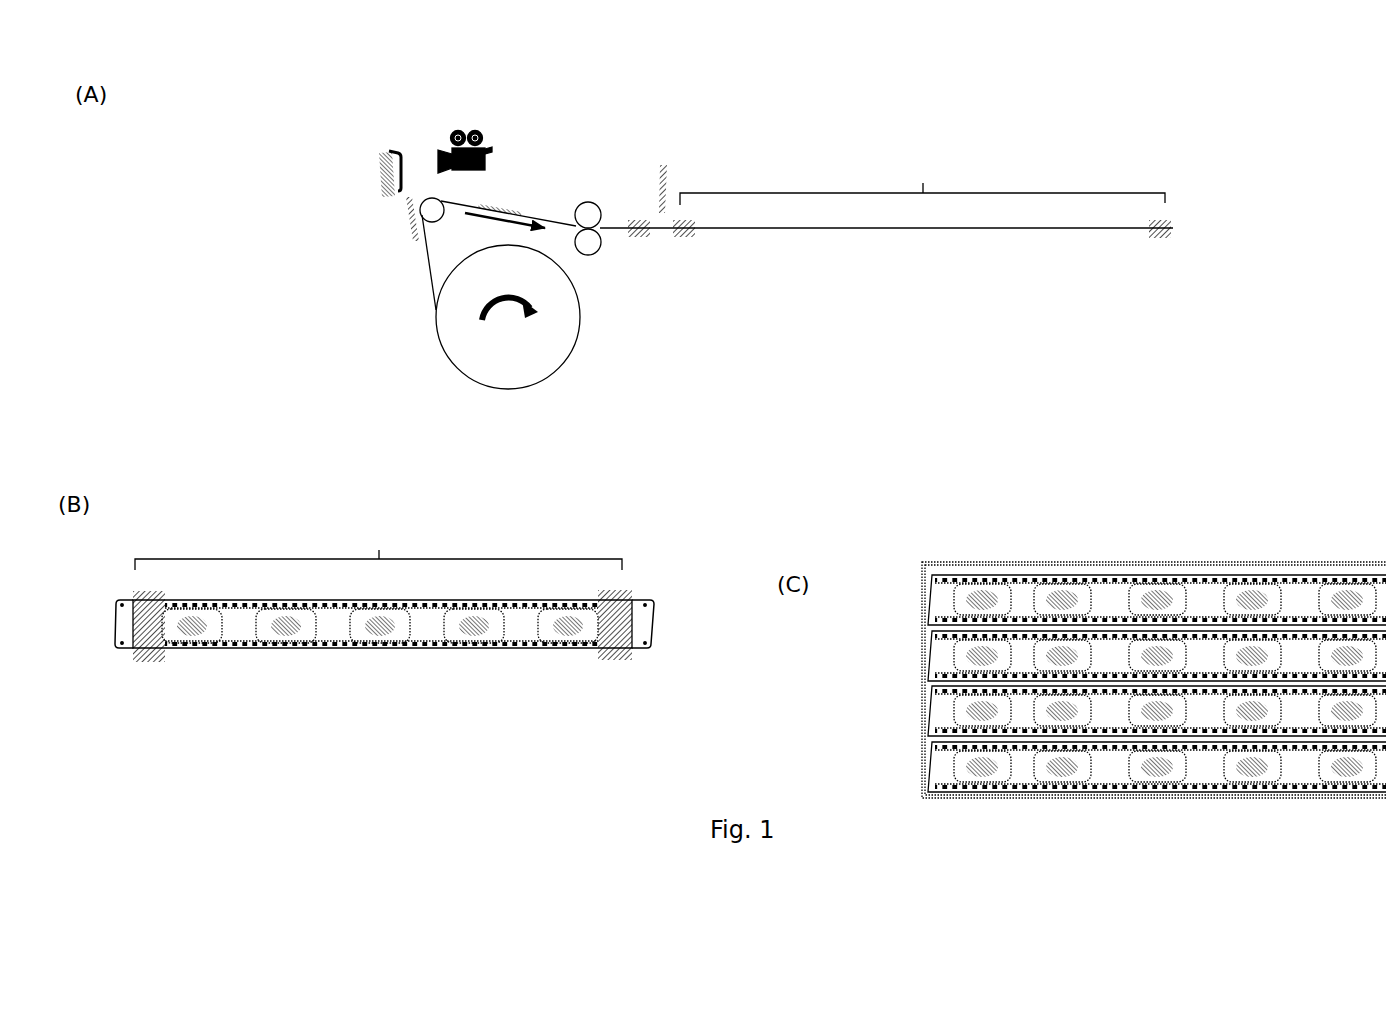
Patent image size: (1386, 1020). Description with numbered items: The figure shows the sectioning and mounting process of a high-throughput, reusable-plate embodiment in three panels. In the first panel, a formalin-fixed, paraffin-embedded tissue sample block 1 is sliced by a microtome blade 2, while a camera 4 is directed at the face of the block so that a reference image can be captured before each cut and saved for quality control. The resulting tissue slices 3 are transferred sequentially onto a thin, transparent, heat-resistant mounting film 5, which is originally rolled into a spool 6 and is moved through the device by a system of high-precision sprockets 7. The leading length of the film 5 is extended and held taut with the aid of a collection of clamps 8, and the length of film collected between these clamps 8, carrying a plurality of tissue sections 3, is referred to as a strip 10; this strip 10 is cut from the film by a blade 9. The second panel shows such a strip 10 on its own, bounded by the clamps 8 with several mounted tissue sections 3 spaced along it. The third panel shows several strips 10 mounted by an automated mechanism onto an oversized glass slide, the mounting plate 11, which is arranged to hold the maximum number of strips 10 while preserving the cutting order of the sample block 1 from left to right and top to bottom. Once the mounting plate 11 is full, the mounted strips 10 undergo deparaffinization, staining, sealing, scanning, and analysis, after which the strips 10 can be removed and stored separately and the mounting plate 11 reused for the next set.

The tissue sample block 1 is at (368, 173).
The microtome blade 2 is at (396, 223).
The tissue slices 3 is at (513, 197).
The camera 4 is at (497, 139).
The mounting film 5 is at (416, 281).
The spool 6 is at (431, 339).
The sprockets 7 is at (590, 194).
The clamps 8 is at (1142, 238).
The blade 9 is at (665, 153).
The strip 10 is at (936, 766).
The mounting plate 11 is at (1108, 556).